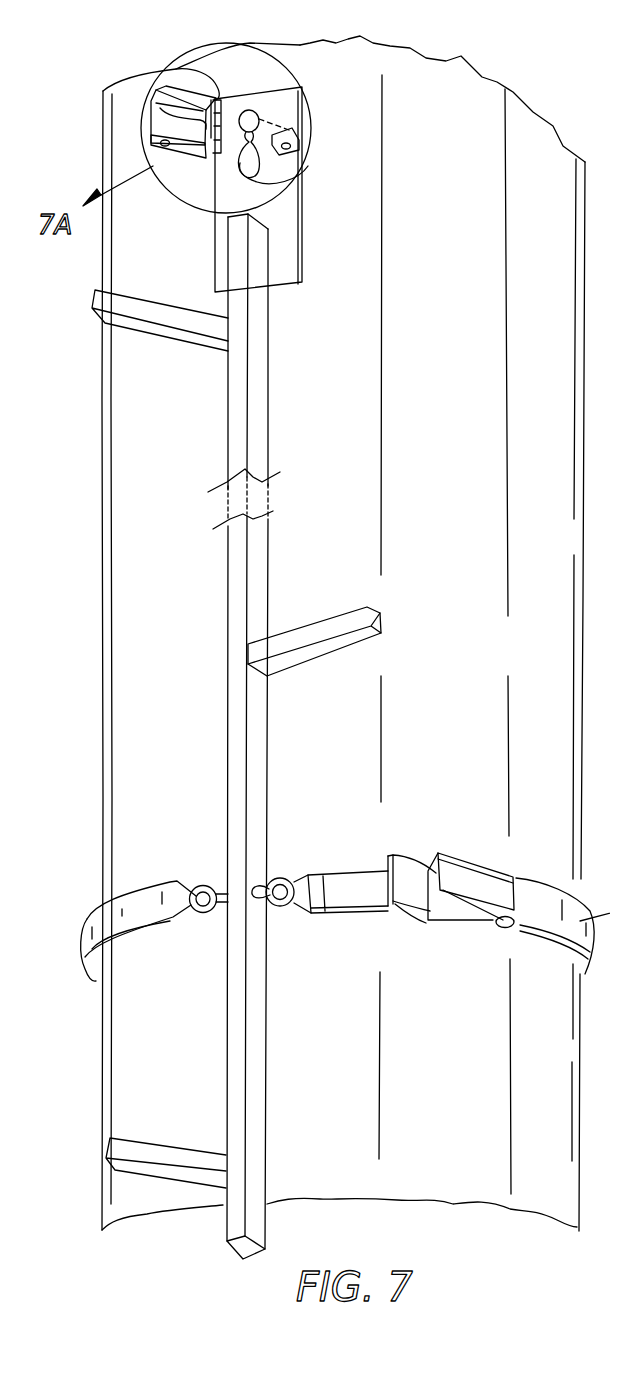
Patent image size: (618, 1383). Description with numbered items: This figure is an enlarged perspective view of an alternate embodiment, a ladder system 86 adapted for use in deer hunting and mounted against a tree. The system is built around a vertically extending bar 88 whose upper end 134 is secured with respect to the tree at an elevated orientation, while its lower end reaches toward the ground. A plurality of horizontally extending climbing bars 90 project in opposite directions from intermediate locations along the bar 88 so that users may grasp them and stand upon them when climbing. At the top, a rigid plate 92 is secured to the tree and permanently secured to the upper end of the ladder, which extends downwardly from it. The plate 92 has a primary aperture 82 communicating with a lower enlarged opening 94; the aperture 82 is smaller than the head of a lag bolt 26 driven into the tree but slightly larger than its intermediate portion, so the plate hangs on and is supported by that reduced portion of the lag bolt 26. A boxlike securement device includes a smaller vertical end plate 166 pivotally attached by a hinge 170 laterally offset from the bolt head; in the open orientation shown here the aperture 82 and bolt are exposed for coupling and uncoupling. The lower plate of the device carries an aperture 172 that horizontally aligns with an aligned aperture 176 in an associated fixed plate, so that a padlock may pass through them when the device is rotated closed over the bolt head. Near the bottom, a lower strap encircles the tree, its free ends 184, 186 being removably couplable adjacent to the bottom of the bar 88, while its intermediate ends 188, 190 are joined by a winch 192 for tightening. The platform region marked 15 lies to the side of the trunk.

The tree stand platform 15 is at (605, 326).
The lag bolt 26 is at (230, 110).
The primary aperture 82 is at (288, 150).
The ladder system 86 is at (228, 603).
The vertically extending bar 88 is at (228, 743).
The horizontally extending climbing bars 90 is at (336, 645).
The rigid plate 92 is at (283, 233).
The lower enlarged opening 94 is at (293, 160).
The upper end 134 is at (262, 313).
The smaller vertical end plate 166 is at (156, 102).
The hinge 170 is at (186, 80).
The aperture 172 is at (164, 148).
The aligned aperture 176 is at (308, 167).
The free end 184 is at (152, 908).
The free end 186 is at (343, 901).
The intermediate end 188 is at (415, 921).
The intermediate end 190 is at (525, 925).
The winch 192 is at (461, 922).